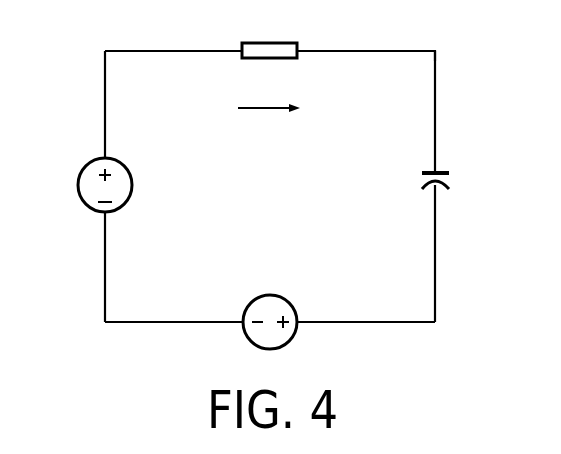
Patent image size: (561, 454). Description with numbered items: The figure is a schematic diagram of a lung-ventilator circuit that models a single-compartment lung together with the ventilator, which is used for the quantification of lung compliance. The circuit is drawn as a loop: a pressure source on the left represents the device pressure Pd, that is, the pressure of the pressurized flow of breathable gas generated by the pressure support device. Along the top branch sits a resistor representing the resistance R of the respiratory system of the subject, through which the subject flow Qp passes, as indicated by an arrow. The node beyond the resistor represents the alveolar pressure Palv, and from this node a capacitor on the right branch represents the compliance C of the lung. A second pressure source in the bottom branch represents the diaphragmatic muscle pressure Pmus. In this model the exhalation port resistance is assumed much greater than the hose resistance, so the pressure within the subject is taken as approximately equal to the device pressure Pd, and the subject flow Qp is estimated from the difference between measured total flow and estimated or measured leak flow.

The resistance of the respiratory system R is at (269, 35).
The alveolar pressure Palv is at (436, 41).
The subject flow Qp is at (269, 94).
The compliance C is at (446, 182).
The device pressure Pd is at (87, 185).
The diaphragmatic muscle pressure Pmus is at (271, 306).